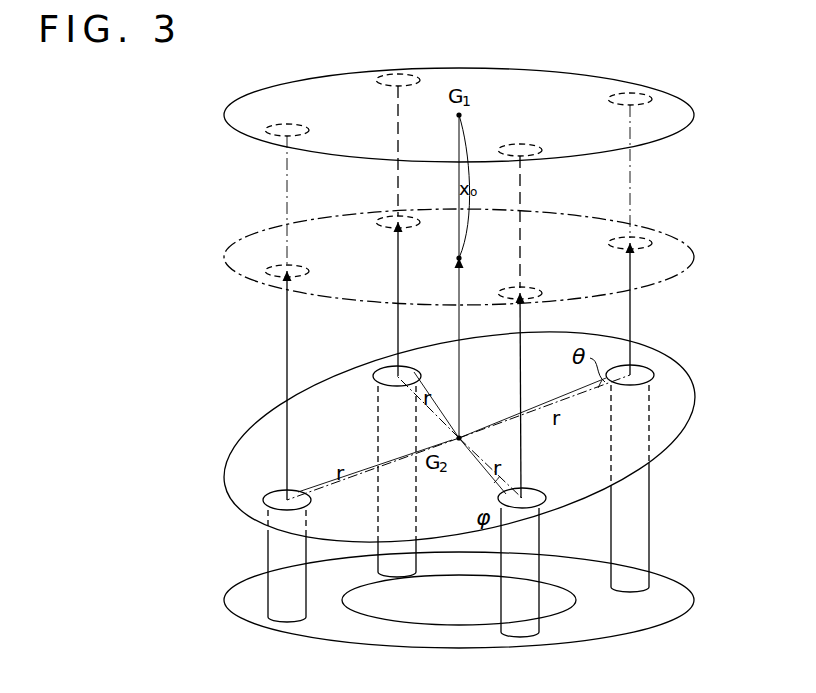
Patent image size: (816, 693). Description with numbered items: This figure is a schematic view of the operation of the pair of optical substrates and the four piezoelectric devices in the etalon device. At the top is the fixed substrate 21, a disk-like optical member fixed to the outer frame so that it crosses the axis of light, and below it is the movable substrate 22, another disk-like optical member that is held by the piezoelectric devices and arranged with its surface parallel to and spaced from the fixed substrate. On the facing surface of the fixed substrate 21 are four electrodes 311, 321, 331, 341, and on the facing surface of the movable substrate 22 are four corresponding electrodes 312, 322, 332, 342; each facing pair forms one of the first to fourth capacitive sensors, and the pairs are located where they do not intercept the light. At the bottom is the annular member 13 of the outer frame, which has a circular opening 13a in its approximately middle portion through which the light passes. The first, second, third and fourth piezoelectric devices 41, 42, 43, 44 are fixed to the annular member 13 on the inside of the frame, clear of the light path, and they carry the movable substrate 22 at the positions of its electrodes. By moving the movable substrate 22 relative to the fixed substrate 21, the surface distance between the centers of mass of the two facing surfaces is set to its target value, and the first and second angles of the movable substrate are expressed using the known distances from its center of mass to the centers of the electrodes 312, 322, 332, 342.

The fixed substrate 21 is at (268, 93).
The electrode 311 is at (305, 129).
The electrode 321 is at (408, 75).
The electrode 331 is at (647, 95).
The electrode 341 is at (530, 147).
The movable substrate 22 is at (237, 480).
The electrode 312 is at (265, 506).
The electrode 322 is at (382, 377).
The electrode 332 is at (655, 373).
The electrode 342 is at (541, 500).
The annular member 13 is at (233, 599).
The circular opening 13a is at (425, 616).
The first piezoelectric device 41 is at (268, 595).
The second piezoelectric device 42 is at (380, 550).
The third piezoelectric device 43 is at (648, 523).
The fourth piezoelectric device 44 is at (528, 597).